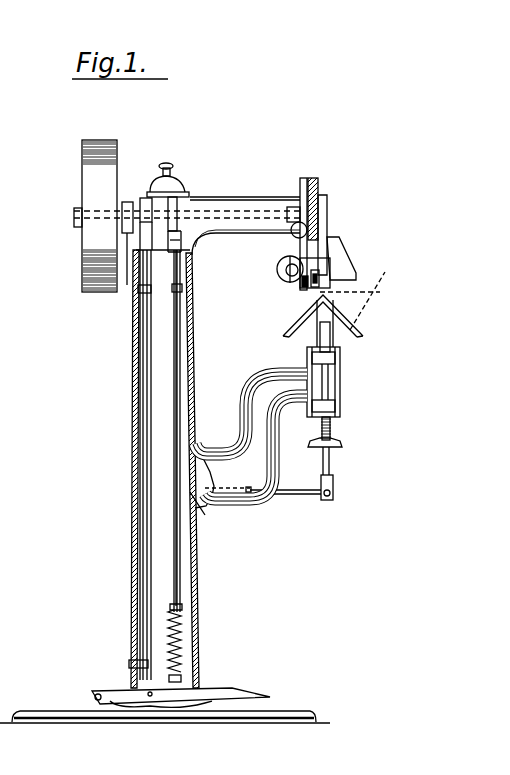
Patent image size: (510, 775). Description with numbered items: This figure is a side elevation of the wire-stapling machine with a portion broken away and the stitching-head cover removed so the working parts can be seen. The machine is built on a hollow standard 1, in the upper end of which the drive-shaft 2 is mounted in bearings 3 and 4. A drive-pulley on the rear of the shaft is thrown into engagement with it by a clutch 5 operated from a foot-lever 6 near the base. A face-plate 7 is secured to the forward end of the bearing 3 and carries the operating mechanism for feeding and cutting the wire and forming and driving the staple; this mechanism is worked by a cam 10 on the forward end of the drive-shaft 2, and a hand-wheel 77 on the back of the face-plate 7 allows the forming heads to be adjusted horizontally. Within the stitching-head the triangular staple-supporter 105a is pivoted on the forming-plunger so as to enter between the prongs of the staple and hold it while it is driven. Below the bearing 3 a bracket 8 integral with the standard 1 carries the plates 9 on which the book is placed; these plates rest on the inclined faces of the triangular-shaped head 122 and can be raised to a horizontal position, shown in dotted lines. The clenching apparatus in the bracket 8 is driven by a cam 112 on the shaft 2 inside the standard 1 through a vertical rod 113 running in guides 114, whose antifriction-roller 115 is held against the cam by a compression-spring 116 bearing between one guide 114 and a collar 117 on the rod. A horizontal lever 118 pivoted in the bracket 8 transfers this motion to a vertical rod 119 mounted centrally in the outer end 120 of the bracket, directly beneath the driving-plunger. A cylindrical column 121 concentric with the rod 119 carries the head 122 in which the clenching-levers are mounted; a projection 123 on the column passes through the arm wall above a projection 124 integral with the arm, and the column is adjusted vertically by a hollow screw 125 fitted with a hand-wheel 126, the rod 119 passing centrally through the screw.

The hollow standard 1 is at (128, 486).
The drive-shaft 2 is at (149, 192).
The bearing 3 is at (259, 197).
The bearing 4 is at (126, 202).
The clutch 5 is at (127, 285).
The foot-lever 6 is at (249, 694).
The face-plate 7 is at (303, 180).
The bracket 8 is at (254, 404).
The plates 9 is at (283, 312).
The cam 10 is at (322, 173).
The hand-wheel 77 is at (289, 269).
The staple-supporter 105a is at (340, 263).
The cam 112 is at (179, 204).
The vertical rod 113 is at (181, 342).
The guides 114 is at (186, 293).
The antifriction-roller 115 is at (182, 244).
The compression-spring 116 is at (182, 636).
The collar 117 is at (179, 606).
The horizontal lever 118 is at (305, 496).
The vertical rod 119 is at (334, 465).
The outer end of arm 120 is at (340, 400).
The cylindrical column 121 is at (337, 345).
The triangular-shaped head 122 is at (358, 320).
The projection 123 is at (345, 380).
The projection 124 is at (346, 390).
The hollow screw 125 is at (343, 443).
The hand-wheel 126 is at (323, 465).